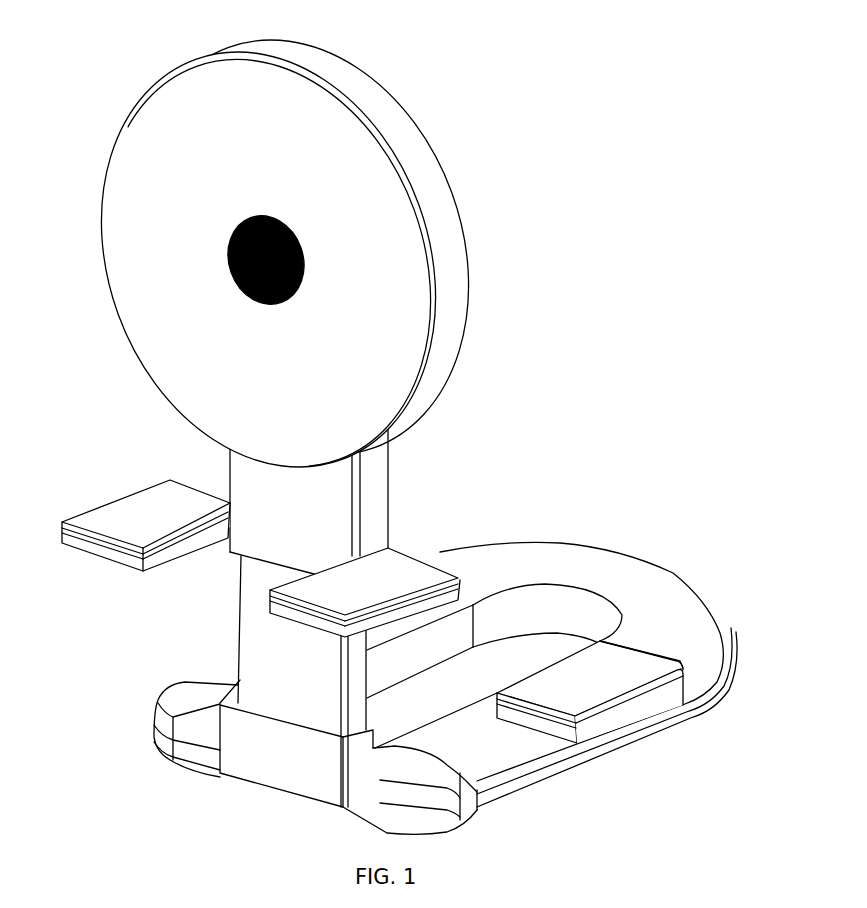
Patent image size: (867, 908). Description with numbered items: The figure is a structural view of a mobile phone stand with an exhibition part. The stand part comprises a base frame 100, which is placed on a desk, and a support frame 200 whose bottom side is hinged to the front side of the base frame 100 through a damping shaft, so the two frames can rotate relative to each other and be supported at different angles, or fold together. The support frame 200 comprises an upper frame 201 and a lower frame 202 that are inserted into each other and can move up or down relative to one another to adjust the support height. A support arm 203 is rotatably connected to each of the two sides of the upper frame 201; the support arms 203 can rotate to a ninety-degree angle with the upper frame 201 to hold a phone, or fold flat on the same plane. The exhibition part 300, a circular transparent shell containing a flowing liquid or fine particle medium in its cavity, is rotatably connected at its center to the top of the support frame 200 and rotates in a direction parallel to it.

The base frame 100 is at (659, 586).
The support frame 200 is at (330, 613).
The upper frame 201 is at (375, 494).
The lower frame 202 is at (320, 686).
The support arm 203 is at (405, 576).
The exhibition part 300 is at (118, 152).